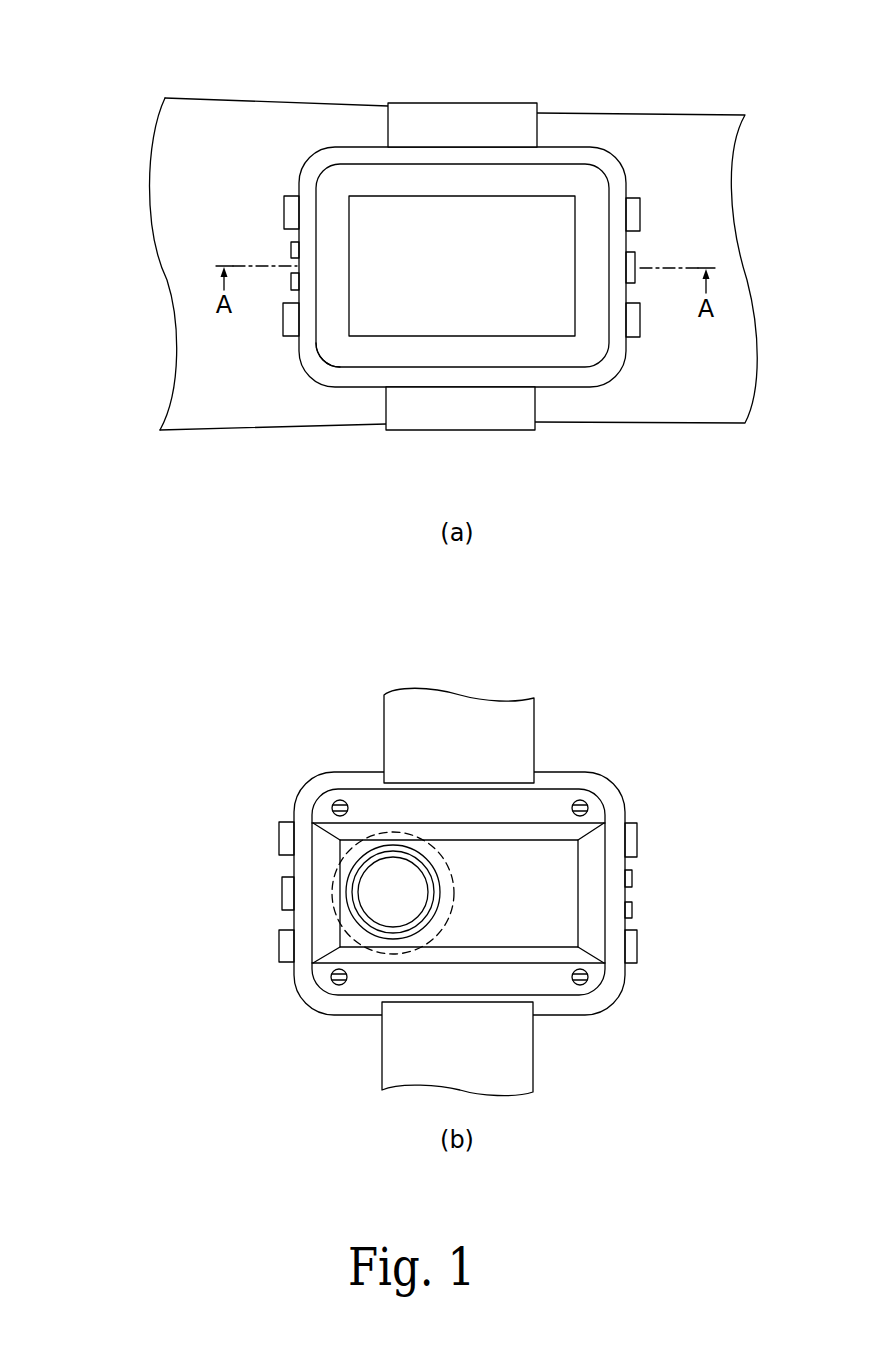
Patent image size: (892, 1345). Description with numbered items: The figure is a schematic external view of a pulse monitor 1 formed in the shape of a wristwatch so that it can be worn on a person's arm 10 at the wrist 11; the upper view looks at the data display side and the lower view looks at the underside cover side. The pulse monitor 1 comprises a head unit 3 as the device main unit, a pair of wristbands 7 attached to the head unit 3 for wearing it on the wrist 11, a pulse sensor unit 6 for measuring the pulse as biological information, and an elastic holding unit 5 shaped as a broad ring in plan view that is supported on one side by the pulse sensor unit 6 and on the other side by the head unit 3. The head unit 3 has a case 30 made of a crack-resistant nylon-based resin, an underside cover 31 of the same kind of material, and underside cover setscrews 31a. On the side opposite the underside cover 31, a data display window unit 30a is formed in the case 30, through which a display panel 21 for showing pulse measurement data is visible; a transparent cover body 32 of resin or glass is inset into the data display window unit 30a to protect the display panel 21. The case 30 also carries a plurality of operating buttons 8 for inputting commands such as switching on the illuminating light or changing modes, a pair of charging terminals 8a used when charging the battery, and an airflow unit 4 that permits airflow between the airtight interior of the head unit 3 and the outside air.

The pulse monitor 1 is at (506, 70).
The head unit 3 is at (616, 155).
The airflow unit 4 is at (646, 258).
The holding unit 5 is at (373, 834).
The pulse sensor unit 6 is at (393, 912).
The wristbands 7 is at (463, 112).
The operating buttons 8 is at (642, 215).
The charging terminals 8a is at (292, 250).
The arm 10 is at (162, 265).
The wrist 11 is at (352, 103).
The display panel 21 is at (457, 317).
The case 30 is at (320, 170).
The data display window unit 30a is at (470, 346).
The underside cover 31 is at (538, 928).
The underside cover setscrews 31a is at (586, 984).
The cover body 32 is at (325, 362).